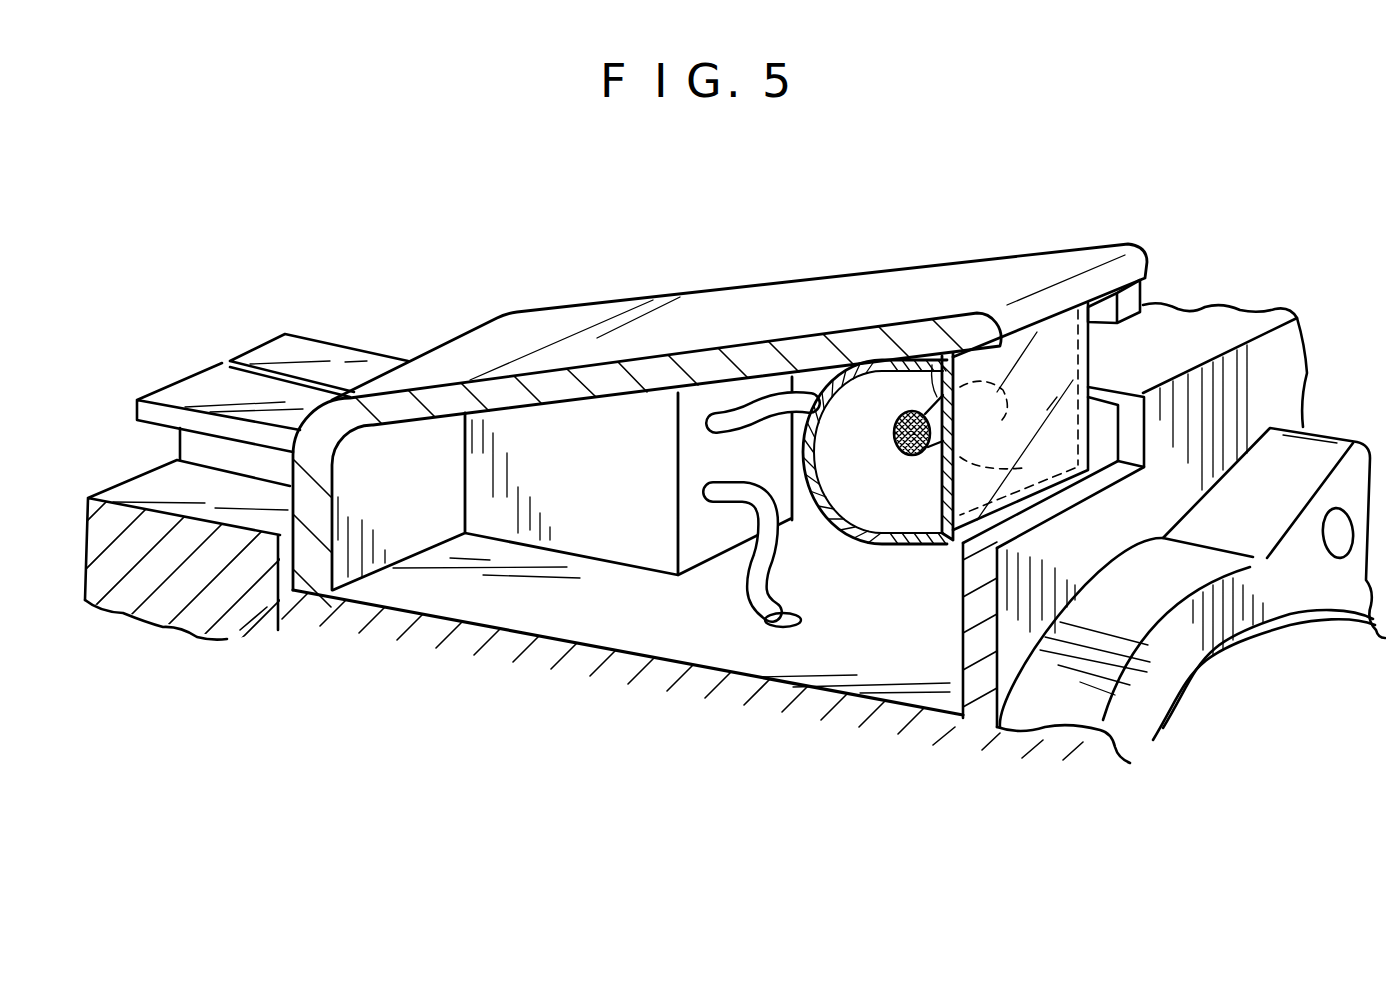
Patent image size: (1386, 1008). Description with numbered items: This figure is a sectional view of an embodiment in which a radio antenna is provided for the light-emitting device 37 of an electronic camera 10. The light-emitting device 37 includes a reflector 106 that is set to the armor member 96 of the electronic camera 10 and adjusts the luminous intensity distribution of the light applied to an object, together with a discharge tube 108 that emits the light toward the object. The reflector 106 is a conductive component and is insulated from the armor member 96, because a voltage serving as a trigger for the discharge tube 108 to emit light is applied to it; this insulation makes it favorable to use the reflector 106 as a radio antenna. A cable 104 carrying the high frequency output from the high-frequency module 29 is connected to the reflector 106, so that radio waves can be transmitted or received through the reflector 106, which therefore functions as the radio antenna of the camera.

The electronic camera 10 is at (1215, 332).
The high-frequency module 29 is at (645, 527).
The light-emitting device 37 is at (1060, 340).
The armor member 96 is at (862, 290).
The cable 104 is at (713, 423).
The reflector 106 is at (903, 513).
The discharge tube 108 is at (900, 447).